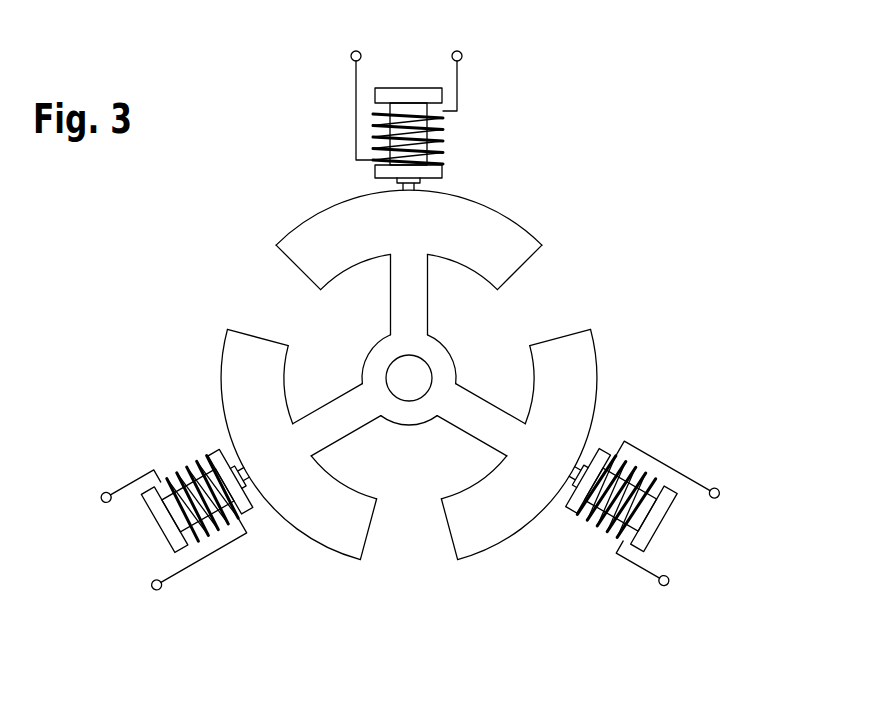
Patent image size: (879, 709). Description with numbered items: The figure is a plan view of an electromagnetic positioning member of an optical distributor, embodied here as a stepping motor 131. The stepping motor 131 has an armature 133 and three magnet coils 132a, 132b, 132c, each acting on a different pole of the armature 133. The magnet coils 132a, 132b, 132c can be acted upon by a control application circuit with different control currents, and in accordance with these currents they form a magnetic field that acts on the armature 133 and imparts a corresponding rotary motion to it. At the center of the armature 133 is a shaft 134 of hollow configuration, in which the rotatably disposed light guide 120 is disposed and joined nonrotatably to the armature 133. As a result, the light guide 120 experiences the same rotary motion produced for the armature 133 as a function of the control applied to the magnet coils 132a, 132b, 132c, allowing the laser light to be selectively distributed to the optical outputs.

The light guide 120 is at (413, 372).
The stepping motor 131 is at (155, 280).
The magnet coil 132a is at (348, 95).
The magnet coil 132b is at (193, 576).
The magnet coil 132c is at (688, 467).
The armature 133 is at (508, 242).
The shaft 134 is at (357, 350).